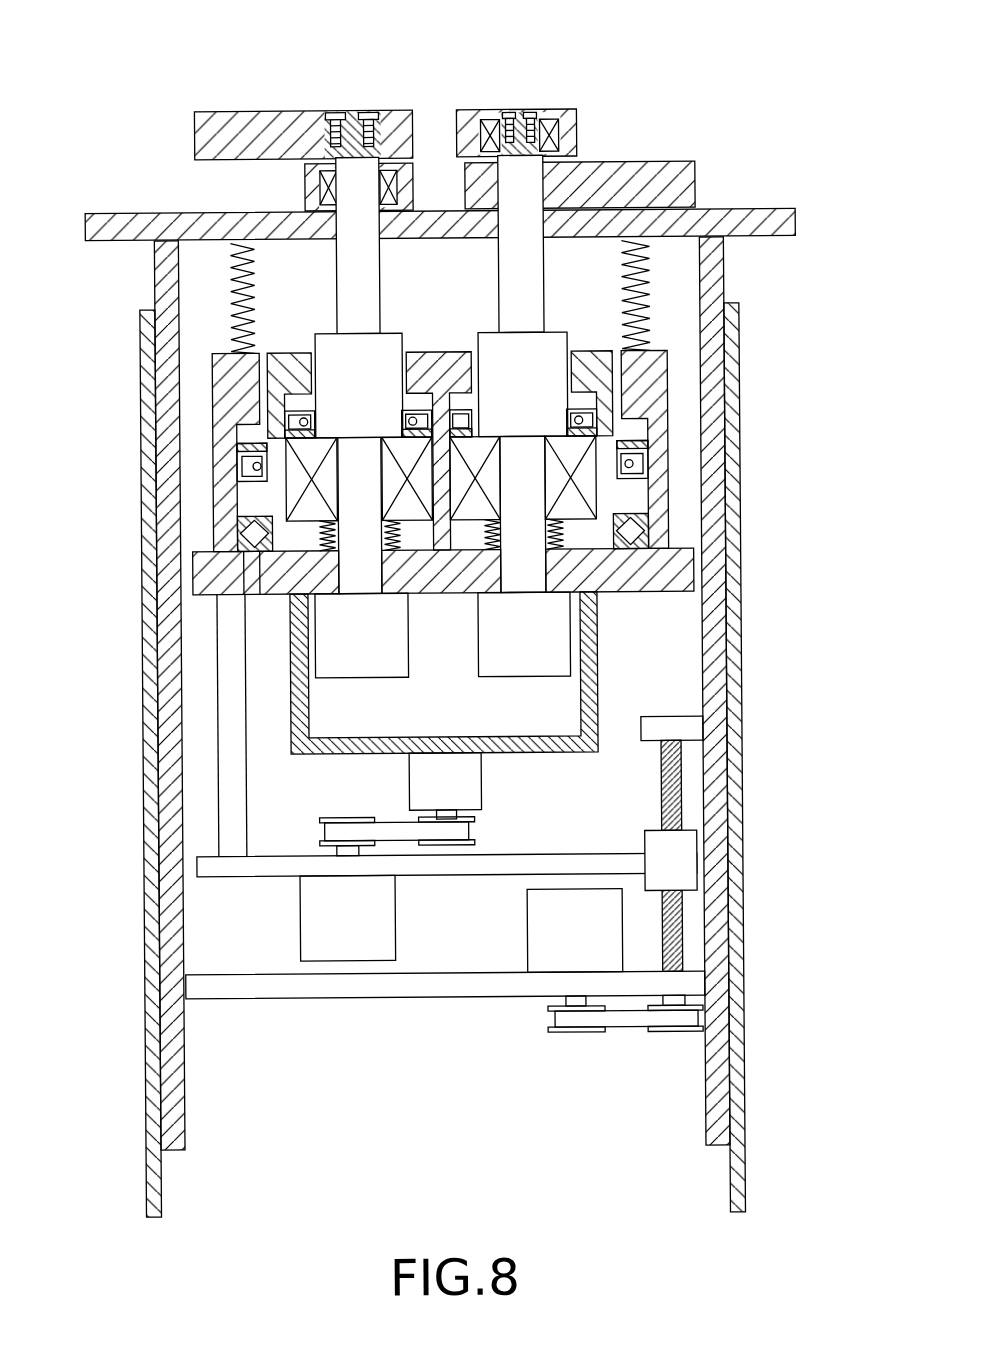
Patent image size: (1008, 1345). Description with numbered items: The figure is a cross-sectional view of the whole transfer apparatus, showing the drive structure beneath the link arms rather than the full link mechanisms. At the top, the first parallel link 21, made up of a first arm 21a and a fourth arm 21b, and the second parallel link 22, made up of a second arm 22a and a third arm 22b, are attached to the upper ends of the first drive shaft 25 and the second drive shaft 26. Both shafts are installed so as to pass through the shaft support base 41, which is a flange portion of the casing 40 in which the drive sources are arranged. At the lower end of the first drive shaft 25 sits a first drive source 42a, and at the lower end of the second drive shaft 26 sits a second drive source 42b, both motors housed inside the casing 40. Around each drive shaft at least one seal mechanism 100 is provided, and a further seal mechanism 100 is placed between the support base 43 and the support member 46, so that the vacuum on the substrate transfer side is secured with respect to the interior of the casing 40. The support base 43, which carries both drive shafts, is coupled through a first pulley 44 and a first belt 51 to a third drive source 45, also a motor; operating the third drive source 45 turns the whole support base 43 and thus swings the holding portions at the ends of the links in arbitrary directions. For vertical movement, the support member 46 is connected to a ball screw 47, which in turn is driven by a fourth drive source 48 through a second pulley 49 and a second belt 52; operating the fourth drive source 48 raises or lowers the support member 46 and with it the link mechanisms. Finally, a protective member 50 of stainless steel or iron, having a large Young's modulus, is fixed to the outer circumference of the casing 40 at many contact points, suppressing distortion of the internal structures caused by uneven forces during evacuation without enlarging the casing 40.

The first parallel link 21 is at (466, 134).
The first arm 21a is at (619, 163).
The fourth arm 21b is at (308, 189).
The second parallel link 22 is at (578, 106).
The second arm 22a is at (241, 110).
The third arm 22b is at (463, 110).
The first drive shaft 25 is at (552, 342).
The second drive shaft 26 is at (327, 347).
The casing 40 is at (493, 717).
The shaft support base 41 is at (763, 211).
The first drive source 42a is at (540, 655).
The second drive source 42b is at (368, 652).
The support base 43 is at (612, 373).
The first pulley 44 is at (453, 845).
The third drive source 45 is at (338, 945).
The support member 46 is at (214, 388).
The ball screw 47 is at (680, 780).
The fourth drive source 48 is at (570, 911).
The second pulley 49 is at (672, 1022).
The protective member 50 is at (742, 338).
The first belt 51 is at (399, 832).
The second belt 52 is at (622, 1022).
The seal mechanism 100 is at (246, 470).